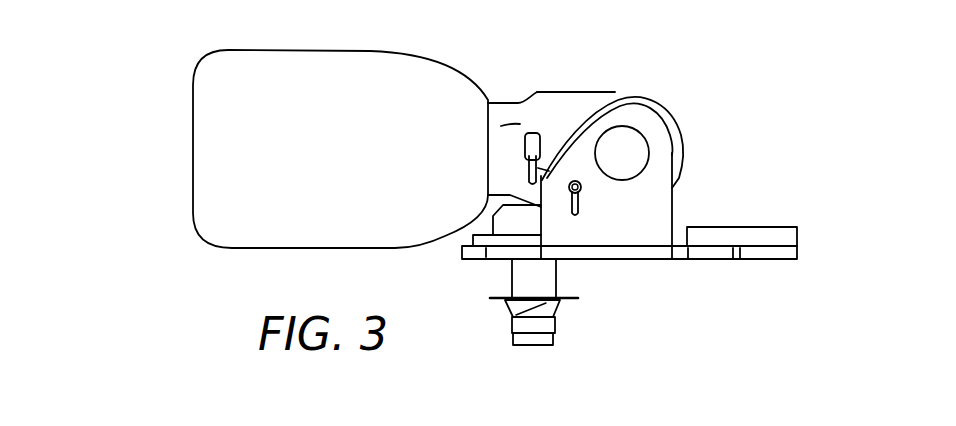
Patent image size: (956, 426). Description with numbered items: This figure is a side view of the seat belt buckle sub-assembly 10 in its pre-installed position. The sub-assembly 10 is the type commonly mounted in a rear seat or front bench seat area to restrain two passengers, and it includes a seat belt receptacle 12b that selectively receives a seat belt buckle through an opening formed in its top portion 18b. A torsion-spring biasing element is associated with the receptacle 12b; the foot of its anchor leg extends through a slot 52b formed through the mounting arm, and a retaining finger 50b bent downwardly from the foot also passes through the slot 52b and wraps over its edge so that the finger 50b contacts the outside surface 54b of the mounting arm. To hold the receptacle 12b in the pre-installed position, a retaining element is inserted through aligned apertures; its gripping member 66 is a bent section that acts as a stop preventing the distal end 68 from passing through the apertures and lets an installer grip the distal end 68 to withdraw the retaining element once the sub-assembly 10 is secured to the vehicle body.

The seat belt buckle sub-assembly 10 is at (132, 116).
The second seat belt receptacle 12b is at (340, 159).
The top portion 18b is at (184, 198).
The retaining finger 50b is at (615, 92).
The slot 52b is at (531, 133).
The outside surface 54b is at (513, 122).
The gripping member 66 is at (581, 189).
The distal end 68 is at (577, 220).